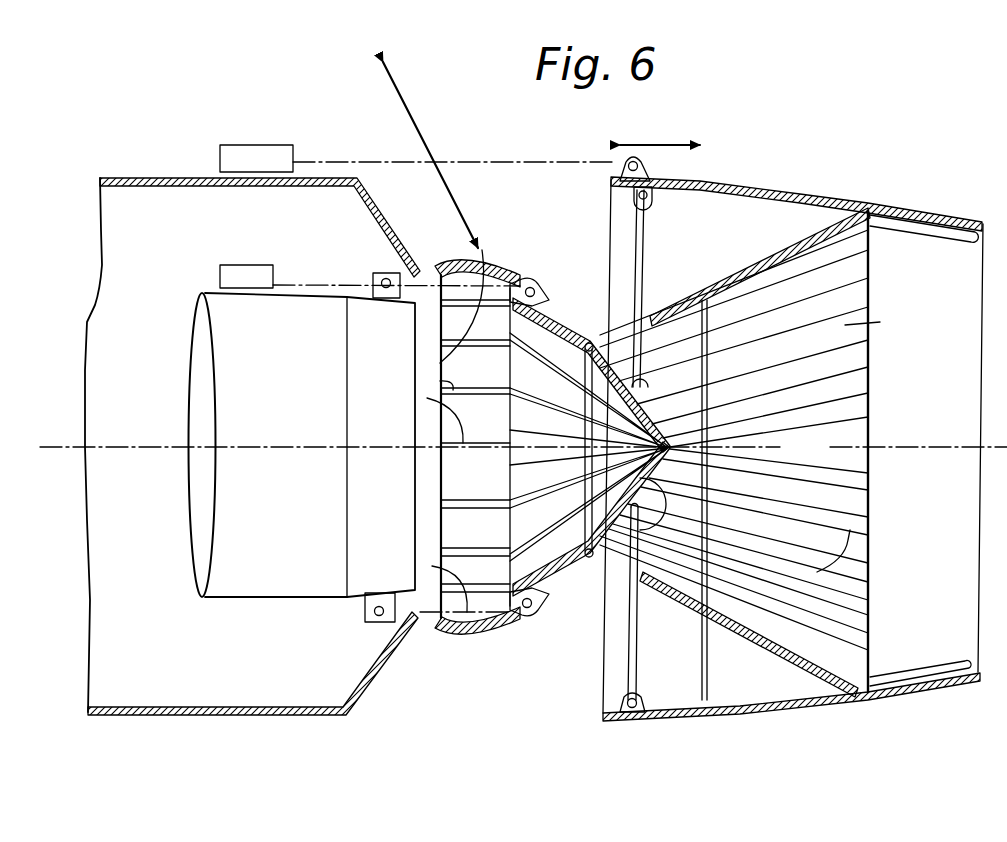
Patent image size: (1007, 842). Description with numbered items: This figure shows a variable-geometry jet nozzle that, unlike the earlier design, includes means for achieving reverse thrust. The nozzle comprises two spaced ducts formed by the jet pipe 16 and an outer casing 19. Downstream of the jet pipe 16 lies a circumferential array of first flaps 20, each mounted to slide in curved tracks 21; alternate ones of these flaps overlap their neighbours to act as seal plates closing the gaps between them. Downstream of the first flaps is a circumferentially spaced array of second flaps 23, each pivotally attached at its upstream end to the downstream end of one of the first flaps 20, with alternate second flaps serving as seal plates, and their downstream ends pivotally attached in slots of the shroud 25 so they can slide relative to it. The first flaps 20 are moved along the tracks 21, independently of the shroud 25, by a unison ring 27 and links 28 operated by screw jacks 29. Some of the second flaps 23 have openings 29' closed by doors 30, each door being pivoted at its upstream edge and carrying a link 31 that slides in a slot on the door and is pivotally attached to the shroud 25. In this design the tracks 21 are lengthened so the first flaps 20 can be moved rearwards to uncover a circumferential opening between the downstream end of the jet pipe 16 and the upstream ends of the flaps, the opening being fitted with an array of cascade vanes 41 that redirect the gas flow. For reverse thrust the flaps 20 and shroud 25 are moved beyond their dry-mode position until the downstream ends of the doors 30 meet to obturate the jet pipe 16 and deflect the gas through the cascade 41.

The jet pipe 16 is at (253, 588).
The outer casing 19 is at (153, 188).
The first flaps 20 is at (567, 320).
The curved tracks 21 is at (427, 398).
The second flaps 23 is at (734, 440).
The shroud 25 is at (818, 197).
The unison ring 27 is at (376, 270).
The links 28 is at (400, 620).
The screw jacks 29 is at (416, 378).
The openings 29' is at (755, 452).
The doors 30 is at (600, 575).
The link 31 is at (633, 640).
The cascade vanes 41 is at (472, 633).